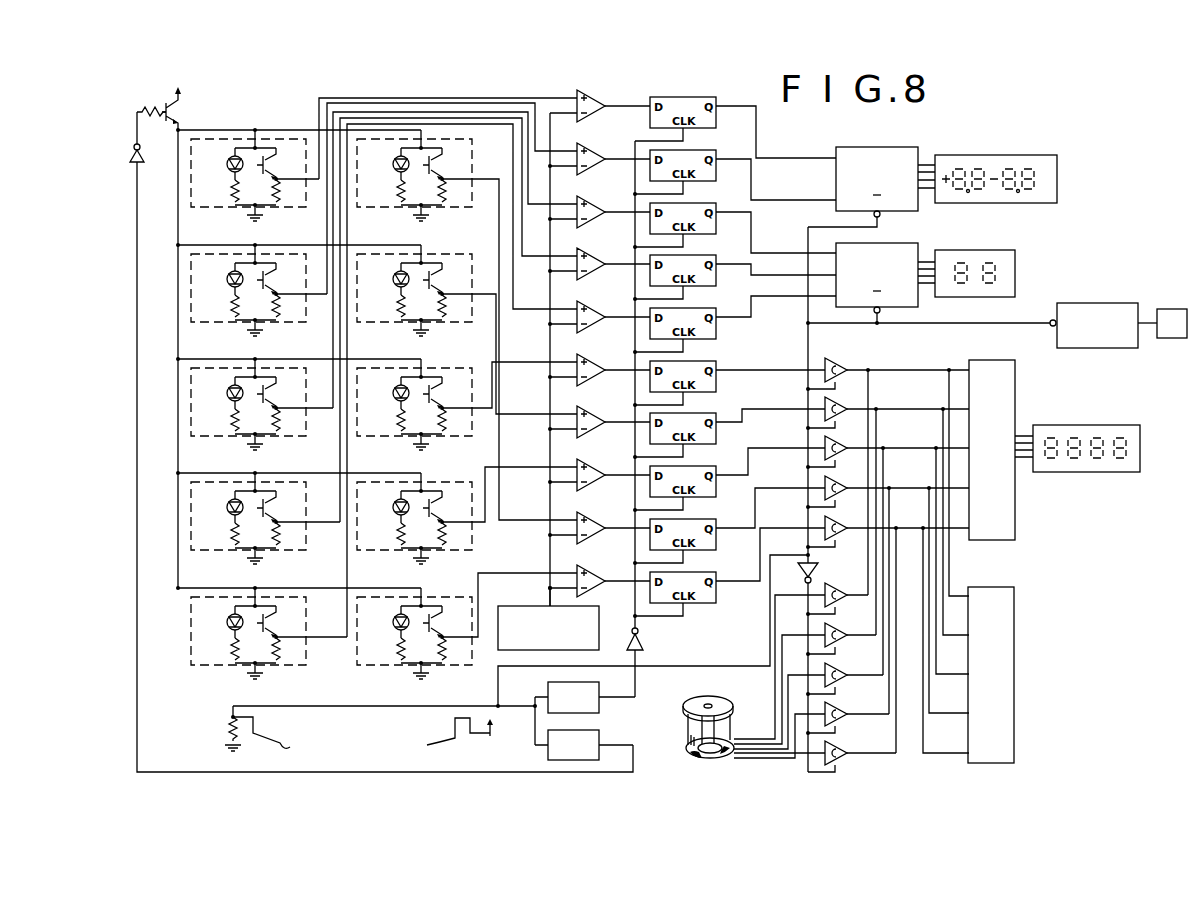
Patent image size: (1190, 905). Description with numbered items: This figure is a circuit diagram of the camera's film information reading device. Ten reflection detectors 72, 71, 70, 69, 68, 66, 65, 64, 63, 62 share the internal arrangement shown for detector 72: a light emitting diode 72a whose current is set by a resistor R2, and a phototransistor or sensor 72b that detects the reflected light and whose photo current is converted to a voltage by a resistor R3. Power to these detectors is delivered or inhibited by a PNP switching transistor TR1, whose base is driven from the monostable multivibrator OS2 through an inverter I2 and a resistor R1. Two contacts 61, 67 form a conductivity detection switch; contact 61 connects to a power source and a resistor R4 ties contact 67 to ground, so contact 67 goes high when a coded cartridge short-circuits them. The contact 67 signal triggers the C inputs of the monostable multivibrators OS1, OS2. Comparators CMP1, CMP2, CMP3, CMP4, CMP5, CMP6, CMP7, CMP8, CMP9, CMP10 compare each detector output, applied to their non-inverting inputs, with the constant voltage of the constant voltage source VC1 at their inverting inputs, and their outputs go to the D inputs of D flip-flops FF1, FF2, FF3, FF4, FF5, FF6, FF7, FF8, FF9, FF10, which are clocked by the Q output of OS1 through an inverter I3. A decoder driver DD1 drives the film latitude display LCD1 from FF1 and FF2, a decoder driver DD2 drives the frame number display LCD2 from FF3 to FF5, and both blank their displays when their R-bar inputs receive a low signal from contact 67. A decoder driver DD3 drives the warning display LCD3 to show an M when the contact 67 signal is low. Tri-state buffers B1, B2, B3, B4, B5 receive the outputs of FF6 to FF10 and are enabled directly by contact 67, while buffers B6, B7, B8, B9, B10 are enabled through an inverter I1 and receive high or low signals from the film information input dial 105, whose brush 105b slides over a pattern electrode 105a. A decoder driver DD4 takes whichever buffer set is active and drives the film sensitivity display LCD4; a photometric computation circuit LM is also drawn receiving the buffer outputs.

The resistor R1 is at (148, 108).
The PNP switching transistor TR1 is at (179, 112).
The inverter I2 is at (142, 154).
The reflection detector 72 is at (255, 186).
The light emitting diode 72a is at (228, 165).
The phototransistor or sensor 72b is at (265, 165).
The resistor R2 is at (231, 195).
The resistor R3 is at (268, 192).
The reflection detector 71 is at (275, 326).
The reflection detector 70 is at (275, 440).
The reflection detector 69 is at (306, 503).
The reflection detector 68 is at (306, 609).
The reflection detector 66 is at (472, 142).
The reflection detector 65 is at (458, 254).
The reflection detector 64 is at (455, 368).
The reflection detector 63 is at (451, 482).
The reflection detector 62 is at (451, 600).
The comparator CMP1 is at (591, 96).
The comparator CMP2 is at (591, 149).
The comparator CMP3 is at (591, 202).
The comparator CMP4 is at (591, 254).
The comparator CMP5 is at (591, 307).
The comparator CMP6 is at (591, 360).
The comparator CMP7 is at (591, 412).
The comparator CMP8 is at (591, 465).
The comparator CMP9 is at (591, 518).
The comparator CMP10 is at (600, 562).
The D type flip-flop FF1 is at (711, 100).
The D type flip-flop FF2 is at (711, 153).
The D type flip-flop FF3 is at (711, 206).
The D type flip-flop FF4 is at (711, 258).
The D type flip-flop FF5 is at (711, 311).
The D type flip-flop FF6 is at (711, 364).
The D type flip-flop FF7 is at (711, 416).
The D type flip-flop FF8 is at (711, 469).
The D type flip-flop FF9 is at (711, 522).
The D type flip-flop FF10 is at (711, 575).
The decoder driver DD1 is at (902, 147).
The decoder driver DD2 is at (902, 243).
The decoder driver DD3 is at (1118, 301).
The decoder driver DD4 is at (1004, 359).
The external display device LCD1 is at (1027, 155).
The external display device LCD2 is at (997, 250).
The warning or M external display device LCD3 is at (1167, 308).
The film sensitivity external display device LCD4 is at (1109, 426).
The photometric computation circuit LM is at (997, 585).
The tri-state buffer B1 is at (834, 362).
The tri-state buffer B2 is at (834, 401).
The tri-state buffer B3 is at (834, 440).
The tri-state buffer B4 is at (834, 480).
The tri-state buffer B5 is at (834, 520).
The tri-state buffer B6 is at (834, 587).
The tri-state buffer B7 is at (834, 627).
The tri-state buffer B8 is at (834, 667).
The tri-state buffer B9 is at (834, 706).
The tri-state buffer B10 is at (834, 745).
The inverter I1 is at (798, 573).
The inverter I3 is at (643, 642).
The constant voltage source VC1 is at (533, 604).
The monostable multivibrator OS1 is at (544, 686).
The monostable multivibrator OS2 is at (594, 729).
The resistor R4 is at (226, 730).
The contact 67 is at (287, 741).
The contact 61 is at (416, 741).
The dial 105 is at (703, 730).
The pattern electrode 105a is at (716, 756).
The brush 105b is at (685, 730).